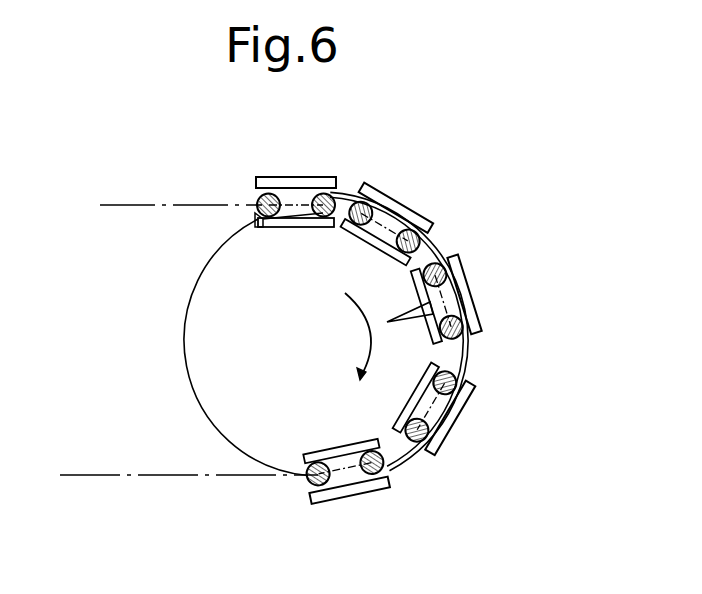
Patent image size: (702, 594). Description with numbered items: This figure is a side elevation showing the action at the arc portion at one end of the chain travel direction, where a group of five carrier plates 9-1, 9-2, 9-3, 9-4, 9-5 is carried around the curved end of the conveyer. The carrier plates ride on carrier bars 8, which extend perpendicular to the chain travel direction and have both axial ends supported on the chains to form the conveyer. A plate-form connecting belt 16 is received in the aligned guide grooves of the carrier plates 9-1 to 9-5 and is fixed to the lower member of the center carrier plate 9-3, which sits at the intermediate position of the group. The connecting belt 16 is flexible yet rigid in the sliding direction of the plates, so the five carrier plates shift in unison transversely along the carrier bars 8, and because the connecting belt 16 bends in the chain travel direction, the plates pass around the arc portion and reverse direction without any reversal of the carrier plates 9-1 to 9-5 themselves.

The carrier bar 8 is at (318, 492).
The carrier plate 9-1 is at (368, 489).
The carrier plate 9-2 is at (468, 402).
The carrier plate 9-3 is at (472, 290).
The carrier plate 9-4 is at (398, 203).
The carrier plate 9-5 is at (306, 177).
The connecting belt 16 is at (465, 354).